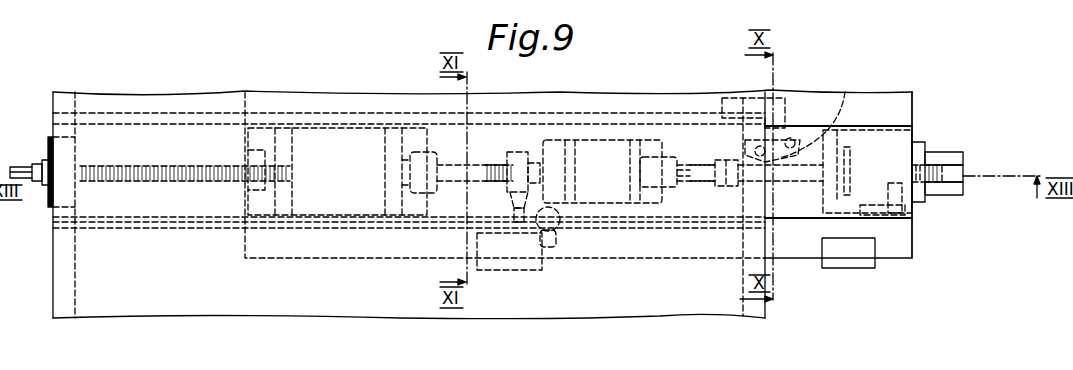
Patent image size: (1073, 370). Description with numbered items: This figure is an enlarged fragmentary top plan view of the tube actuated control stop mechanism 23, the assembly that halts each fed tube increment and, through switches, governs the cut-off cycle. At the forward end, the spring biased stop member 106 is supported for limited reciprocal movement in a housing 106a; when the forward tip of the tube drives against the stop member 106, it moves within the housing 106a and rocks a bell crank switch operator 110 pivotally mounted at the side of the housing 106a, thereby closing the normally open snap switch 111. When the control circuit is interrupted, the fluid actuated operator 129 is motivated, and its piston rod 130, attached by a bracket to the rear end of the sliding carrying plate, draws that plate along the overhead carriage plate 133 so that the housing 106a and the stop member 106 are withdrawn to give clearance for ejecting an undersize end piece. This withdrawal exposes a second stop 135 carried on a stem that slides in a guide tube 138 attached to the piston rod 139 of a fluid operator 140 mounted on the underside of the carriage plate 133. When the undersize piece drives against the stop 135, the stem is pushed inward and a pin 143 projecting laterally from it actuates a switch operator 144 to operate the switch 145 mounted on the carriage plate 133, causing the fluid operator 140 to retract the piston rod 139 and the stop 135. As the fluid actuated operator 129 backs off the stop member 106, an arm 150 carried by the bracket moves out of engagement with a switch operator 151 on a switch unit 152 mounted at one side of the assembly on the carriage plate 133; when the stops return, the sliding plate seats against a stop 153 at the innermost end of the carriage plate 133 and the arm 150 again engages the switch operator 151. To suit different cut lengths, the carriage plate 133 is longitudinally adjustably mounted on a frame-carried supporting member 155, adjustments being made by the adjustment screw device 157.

The control stop mechanism 23 is at (888, 268).
The stop member 106 is at (950, 190).
The housing 106a is at (832, 201).
The bell crank switch operator 110 is at (905, 214).
The snap switch 111 is at (848, 270).
The fluid actuated operator 129 is at (355, 128).
The piston rod 130 is at (457, 164).
The carriage plate 133 is at (905, 135).
The stop 135 is at (940, 177).
The guide tube 138 is at (740, 180).
The piston rod 139 is at (683, 179).
The fluid operator 140 is at (606, 140).
The pin 143 is at (828, 112).
The switch operator 144 is at (745, 146).
The switch 145 is at (715, 100).
The arm 150 is at (508, 201).
The switch operator 151 is at (552, 222).
The switch unit 152 is at (525, 270).
The stop 153 is at (920, 142).
The supporting member 155 is at (665, 305).
The adjustment screw device 157 is at (25, 168).